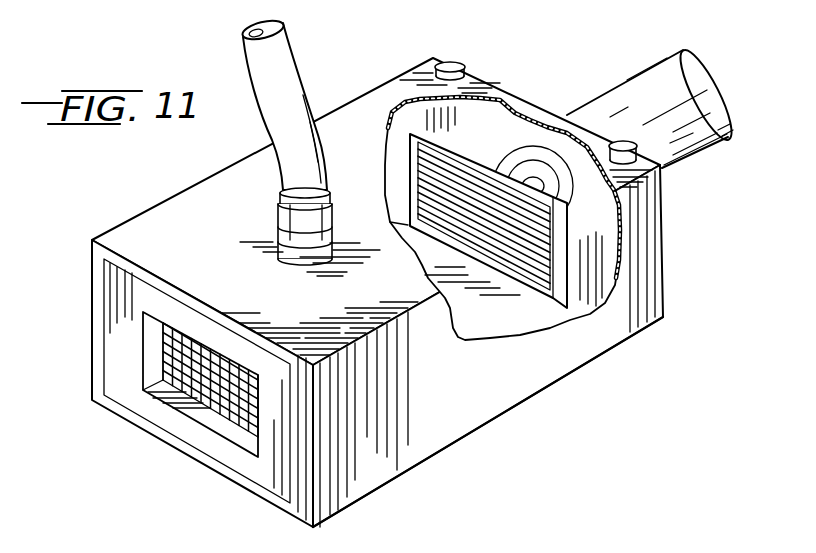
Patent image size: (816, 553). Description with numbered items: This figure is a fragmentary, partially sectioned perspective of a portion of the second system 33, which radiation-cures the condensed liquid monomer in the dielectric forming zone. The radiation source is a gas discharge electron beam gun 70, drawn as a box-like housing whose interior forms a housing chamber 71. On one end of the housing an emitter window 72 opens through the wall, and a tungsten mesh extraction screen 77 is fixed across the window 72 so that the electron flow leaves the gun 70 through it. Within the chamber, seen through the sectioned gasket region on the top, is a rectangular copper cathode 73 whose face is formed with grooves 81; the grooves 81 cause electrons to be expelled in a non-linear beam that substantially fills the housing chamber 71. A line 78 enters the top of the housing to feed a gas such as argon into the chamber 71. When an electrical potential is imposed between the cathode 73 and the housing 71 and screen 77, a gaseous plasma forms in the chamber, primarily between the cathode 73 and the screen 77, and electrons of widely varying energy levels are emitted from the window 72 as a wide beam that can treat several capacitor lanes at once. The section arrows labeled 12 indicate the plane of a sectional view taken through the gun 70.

The section line 12- 12 is at (716, 53).
The second system 33 is at (150, 181).
The gas discharge electron beam gun 70 is at (540, 388).
The housing chamber 71 is at (423, 458).
The emitter window 72 is at (172, 333).
The rectangular copper cathode 73 is at (527, 295).
The tungsten mesh extraction screen 77 is at (212, 401).
The line 78 is at (297, 64).
The grooves 81 is at (438, 178).